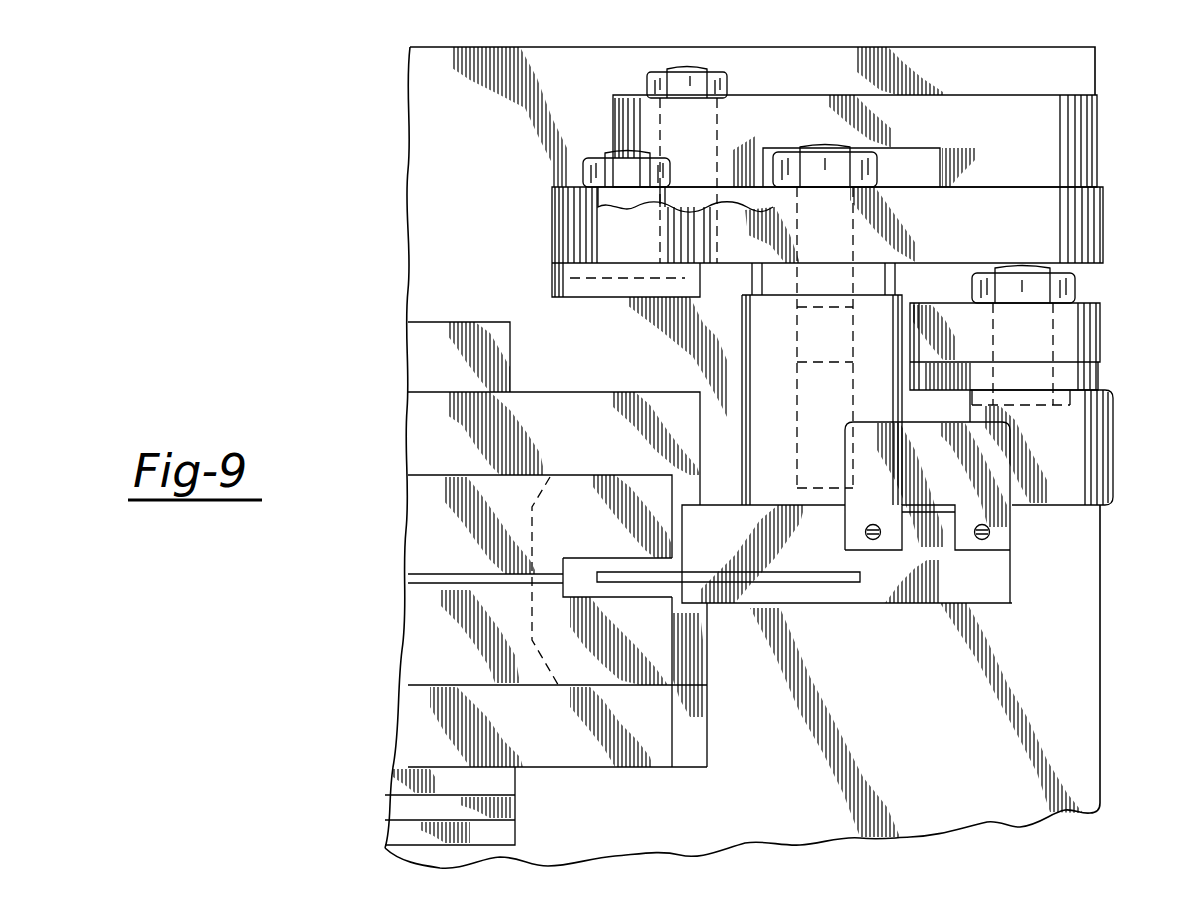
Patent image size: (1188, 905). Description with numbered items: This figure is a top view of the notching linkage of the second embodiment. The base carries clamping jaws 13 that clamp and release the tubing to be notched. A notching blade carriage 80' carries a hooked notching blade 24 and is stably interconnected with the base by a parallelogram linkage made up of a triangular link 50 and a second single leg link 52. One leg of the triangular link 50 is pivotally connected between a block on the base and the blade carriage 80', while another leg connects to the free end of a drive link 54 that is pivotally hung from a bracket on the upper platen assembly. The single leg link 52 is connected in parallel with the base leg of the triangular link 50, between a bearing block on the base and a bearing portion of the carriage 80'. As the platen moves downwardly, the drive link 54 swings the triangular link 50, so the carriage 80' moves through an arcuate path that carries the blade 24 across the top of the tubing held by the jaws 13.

The clamping jaws 13 is at (588, 483).
The hooked notching blade 24 is at (833, 582).
The triangular link 50 is at (1103, 222).
The second single leg link 52 is at (1100, 335).
The drive link 54 is at (1097, 130).
The notching blade carriage 80' is at (1073, 447).